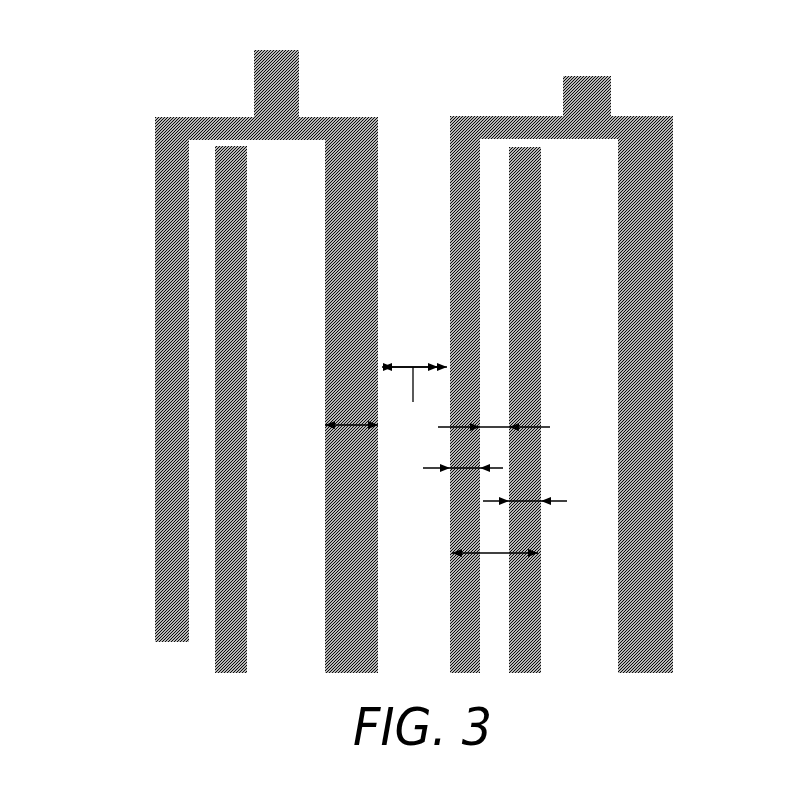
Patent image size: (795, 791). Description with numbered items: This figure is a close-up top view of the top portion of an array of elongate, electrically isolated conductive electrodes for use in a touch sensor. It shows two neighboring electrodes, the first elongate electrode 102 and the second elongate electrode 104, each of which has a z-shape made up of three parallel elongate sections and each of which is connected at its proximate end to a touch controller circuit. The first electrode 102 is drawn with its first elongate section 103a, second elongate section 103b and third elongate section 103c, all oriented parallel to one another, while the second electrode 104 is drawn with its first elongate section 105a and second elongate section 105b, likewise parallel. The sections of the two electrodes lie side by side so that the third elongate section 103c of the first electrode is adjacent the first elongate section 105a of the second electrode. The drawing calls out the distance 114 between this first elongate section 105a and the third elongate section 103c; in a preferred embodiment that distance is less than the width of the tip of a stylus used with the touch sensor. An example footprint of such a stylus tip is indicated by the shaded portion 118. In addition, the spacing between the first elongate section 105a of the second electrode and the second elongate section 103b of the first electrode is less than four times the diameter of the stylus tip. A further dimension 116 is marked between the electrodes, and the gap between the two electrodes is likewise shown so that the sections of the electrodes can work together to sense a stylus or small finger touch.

The first elongate electrode 102 is at (249, 361).
The second elongate electrode 104 is at (581, 368).
The first elongate section of the first electrode 103a is at (157, 223).
The second elongate section of the first electrode 103b is at (377, 233).
The third elongate section of the first electrode 103c is at (540, 616).
The first elongate section of the second electrode 105a is at (450, 313).
The second elongate section of the second electrode 105b is at (673, 307).
The distance 114 is at (492, 427).
The gap between electrodes 116 is at (386, 399).
The footprint of the tip of a stylus 118 is at (495, 553).